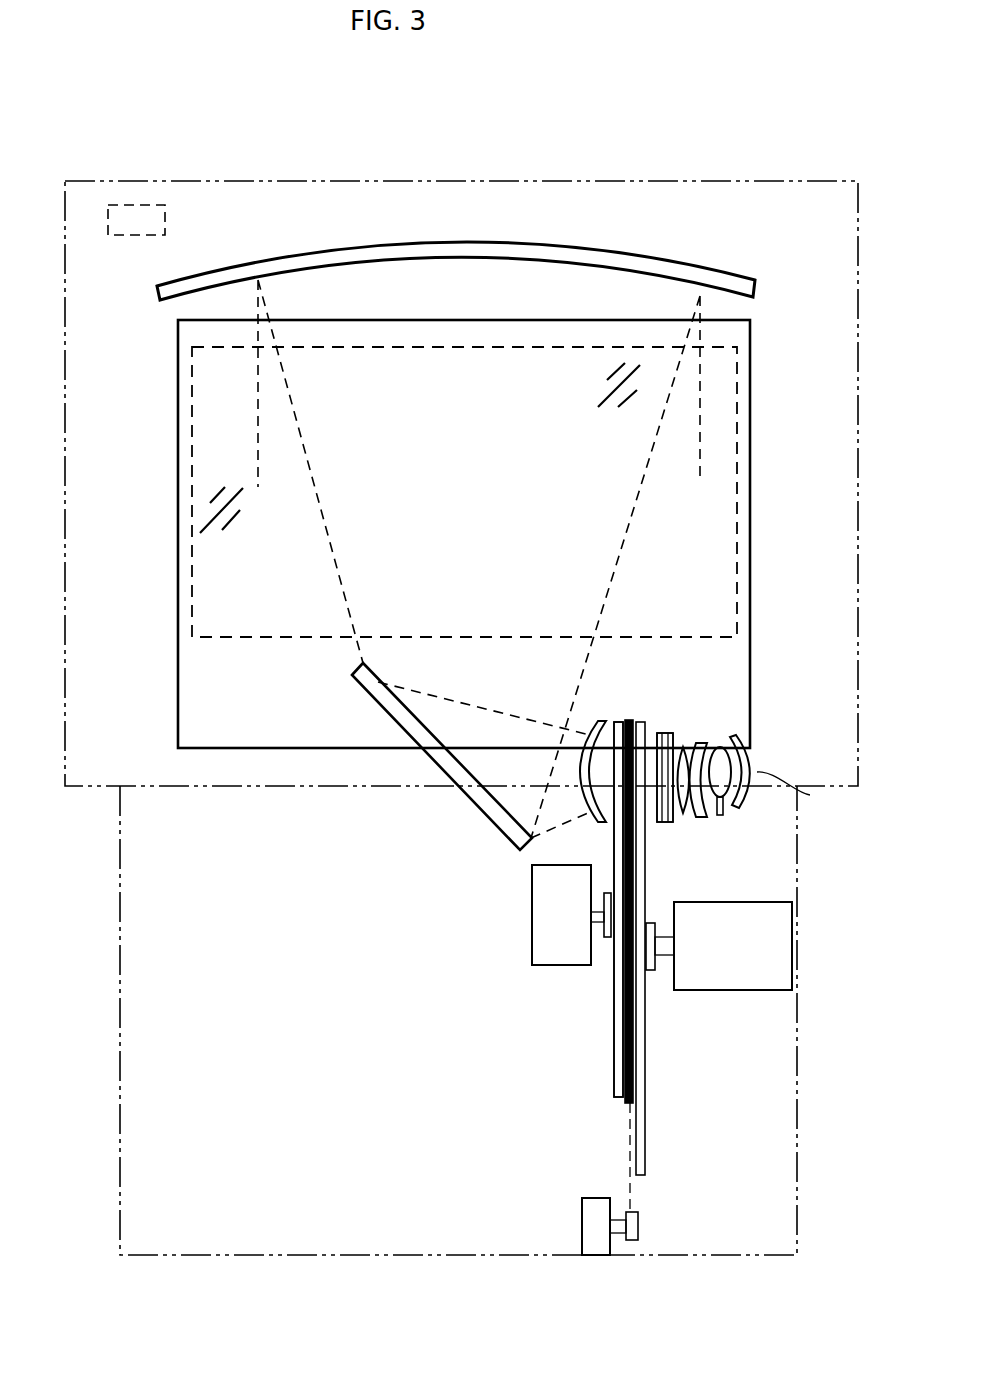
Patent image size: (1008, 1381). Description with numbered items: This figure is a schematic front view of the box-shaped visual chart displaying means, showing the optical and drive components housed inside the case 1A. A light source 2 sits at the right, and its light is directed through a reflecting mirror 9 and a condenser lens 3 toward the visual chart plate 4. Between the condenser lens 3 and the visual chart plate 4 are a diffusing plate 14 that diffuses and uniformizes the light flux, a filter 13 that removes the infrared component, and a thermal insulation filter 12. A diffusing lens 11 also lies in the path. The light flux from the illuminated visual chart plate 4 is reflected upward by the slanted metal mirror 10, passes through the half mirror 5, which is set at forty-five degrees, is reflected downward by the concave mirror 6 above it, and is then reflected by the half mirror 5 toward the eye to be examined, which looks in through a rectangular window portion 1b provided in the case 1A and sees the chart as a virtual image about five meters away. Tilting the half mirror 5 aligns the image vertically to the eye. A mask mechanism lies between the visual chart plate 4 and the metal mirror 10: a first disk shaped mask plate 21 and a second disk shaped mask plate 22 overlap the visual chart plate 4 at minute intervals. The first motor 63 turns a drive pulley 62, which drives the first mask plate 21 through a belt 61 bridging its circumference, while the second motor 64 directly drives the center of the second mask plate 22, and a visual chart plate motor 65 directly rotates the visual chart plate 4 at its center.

The case 1A is at (795, 181).
The rectangular window portion 1b is at (158, 203).
The light source 2 is at (757, 753).
The condenser lens 3 is at (688, 818).
The visual chart plate 4 is at (632, 725).
The half mirror 5 is at (687, 525).
The concave mirror 6 is at (553, 243).
The reflecting mirror 9 is at (810, 795).
The metal mirror 10 is at (375, 704).
The diffusing lens 11 is at (586, 726).
The thermal insulation filter 12 is at (725, 762).
The filter 13 is at (664, 736).
The diffusing plate 14 is at (661, 736).
The first disk shaped mask plate 21 is at (620, 724).
The second disk shaped mask plate 22 is at (613, 1089).
The belt 61 is at (636, 1190).
The drive pulley 62 is at (640, 1226).
The first motor 63 is at (582, 1210).
The second motor 64 is at (560, 945).
The visual chart plate motor 65 is at (795, 903).